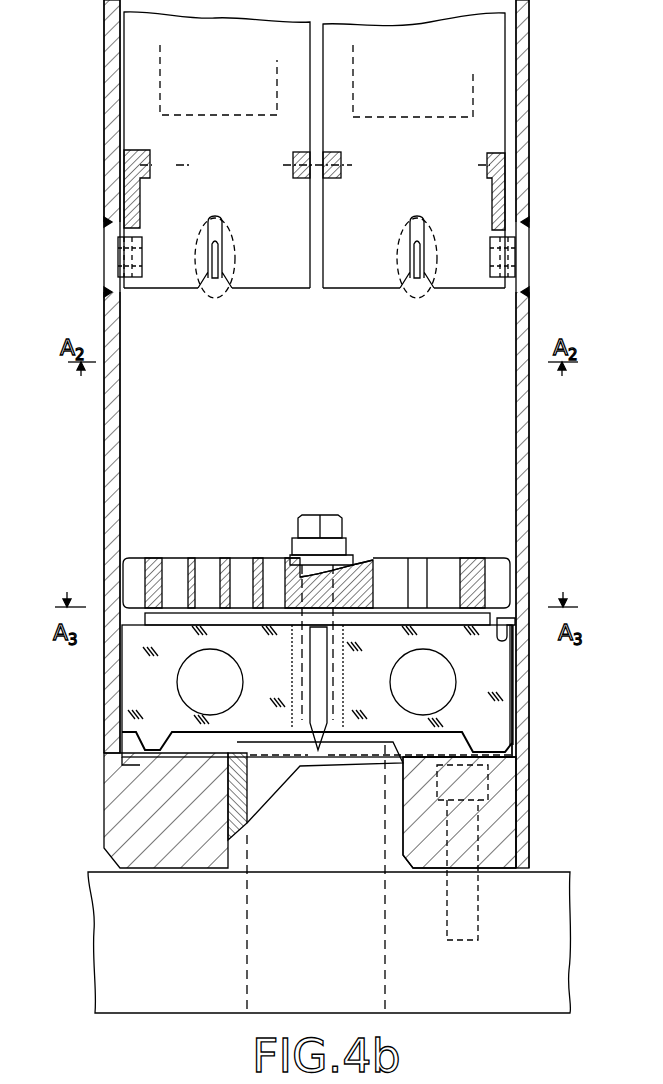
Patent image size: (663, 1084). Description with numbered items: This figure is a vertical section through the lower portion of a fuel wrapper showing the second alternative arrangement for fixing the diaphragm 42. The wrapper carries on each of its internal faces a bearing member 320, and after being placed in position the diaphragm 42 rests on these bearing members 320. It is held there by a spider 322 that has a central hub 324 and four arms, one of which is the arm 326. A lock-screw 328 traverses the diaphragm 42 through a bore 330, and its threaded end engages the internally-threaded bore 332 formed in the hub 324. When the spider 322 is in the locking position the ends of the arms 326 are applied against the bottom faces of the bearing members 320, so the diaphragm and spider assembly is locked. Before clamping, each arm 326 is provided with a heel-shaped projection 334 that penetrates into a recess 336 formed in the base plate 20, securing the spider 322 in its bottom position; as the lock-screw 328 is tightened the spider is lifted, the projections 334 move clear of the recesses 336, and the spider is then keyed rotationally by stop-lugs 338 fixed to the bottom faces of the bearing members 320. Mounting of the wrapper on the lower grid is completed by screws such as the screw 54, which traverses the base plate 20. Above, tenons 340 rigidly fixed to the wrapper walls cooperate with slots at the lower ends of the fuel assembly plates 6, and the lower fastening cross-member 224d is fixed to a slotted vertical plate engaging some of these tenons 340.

The fuel assembly plate 6 is at (217, 168).
The lower fastening cross-member 224d is at (130, 158).
The tenon 340 is at (182, 268).
The diaphragm 42 is at (146, 556).
The bore 330 is at (291, 566).
The lock-screw 328 is at (354, 540).
The arm 326 is at (142, 660).
The heel-shaped projection 334 is at (146, 742).
The recess 336 is at (140, 760).
The internally-threaded bore 332 is at (356, 752).
The bearing member 320 is at (510, 625).
The stop-lug 338 is at (514, 676).
The spider 322 is at (516, 718).
The central hub 324 is at (292, 720).
The base plate 20 is at (118, 824).
The screw 54 is at (470, 895).